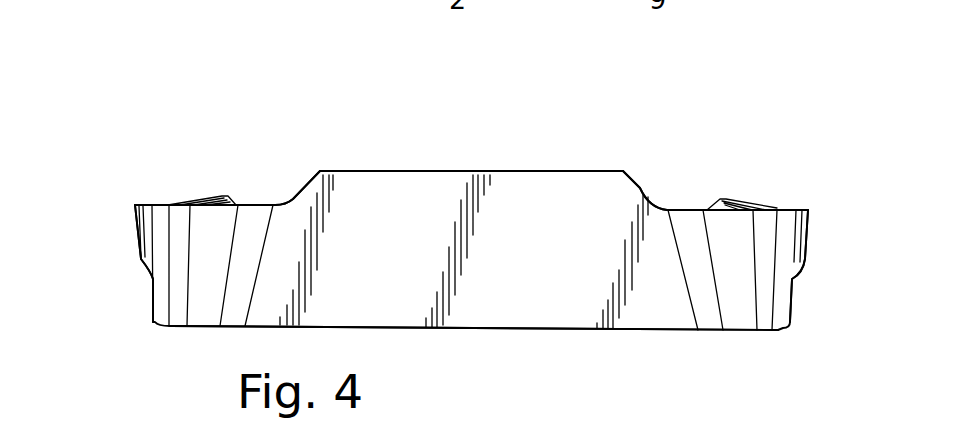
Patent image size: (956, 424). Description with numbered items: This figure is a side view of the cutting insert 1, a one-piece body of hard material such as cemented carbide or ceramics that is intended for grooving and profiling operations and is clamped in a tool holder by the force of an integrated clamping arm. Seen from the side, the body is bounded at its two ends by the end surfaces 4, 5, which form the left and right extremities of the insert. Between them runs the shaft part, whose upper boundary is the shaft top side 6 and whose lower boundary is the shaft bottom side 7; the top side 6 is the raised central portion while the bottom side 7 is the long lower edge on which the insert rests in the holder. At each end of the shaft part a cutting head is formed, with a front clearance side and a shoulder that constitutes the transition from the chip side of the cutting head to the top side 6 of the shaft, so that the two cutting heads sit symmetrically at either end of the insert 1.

The cutting insert 1 is at (427, 158).
The end surface 4 is at (152, 295).
The end surface 5 is at (795, 302).
The shaft top side 6 is at (487, 170).
The shaft bottom side 7 is at (522, 330).